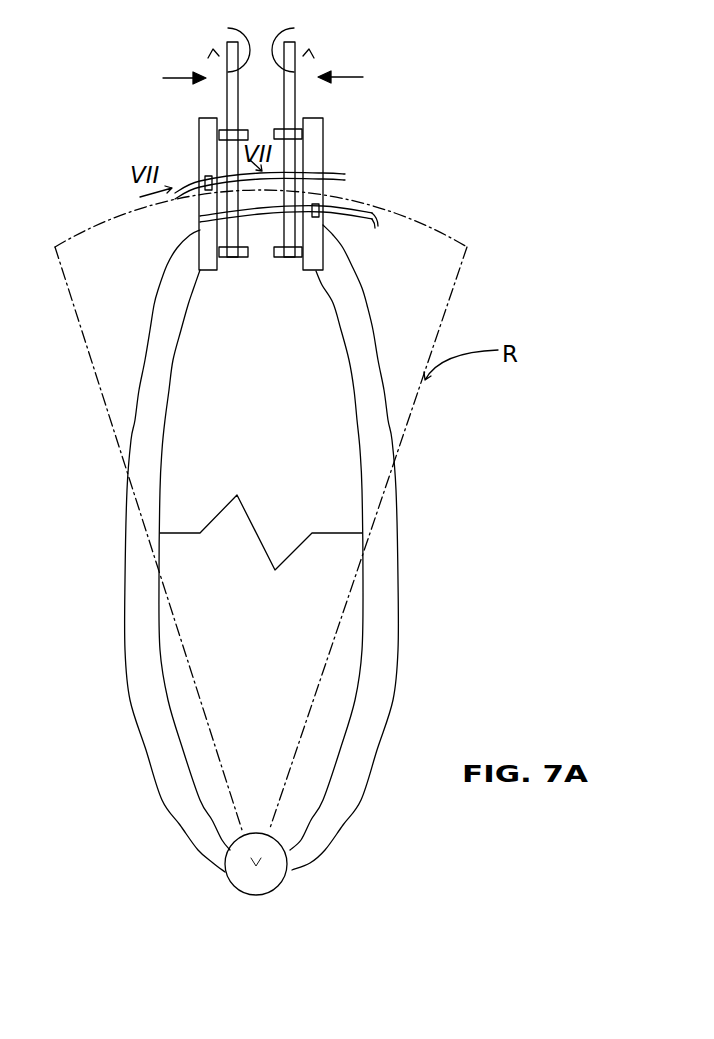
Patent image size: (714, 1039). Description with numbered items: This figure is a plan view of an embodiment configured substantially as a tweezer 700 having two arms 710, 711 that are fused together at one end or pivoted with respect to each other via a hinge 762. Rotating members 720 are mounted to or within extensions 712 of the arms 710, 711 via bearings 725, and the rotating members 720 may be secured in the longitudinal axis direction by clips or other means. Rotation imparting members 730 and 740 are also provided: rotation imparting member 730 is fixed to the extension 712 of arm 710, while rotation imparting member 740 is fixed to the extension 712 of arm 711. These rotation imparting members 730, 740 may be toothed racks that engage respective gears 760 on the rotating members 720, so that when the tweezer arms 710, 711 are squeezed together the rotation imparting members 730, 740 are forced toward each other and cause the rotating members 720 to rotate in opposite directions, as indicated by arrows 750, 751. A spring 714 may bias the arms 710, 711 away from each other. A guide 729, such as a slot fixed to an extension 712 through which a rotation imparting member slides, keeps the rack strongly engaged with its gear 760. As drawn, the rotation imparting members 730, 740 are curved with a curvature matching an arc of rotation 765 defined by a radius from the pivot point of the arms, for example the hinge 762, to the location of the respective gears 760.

The tweezer 700 is at (479, 513).
The arm 710 is at (398, 660).
The arm 711 is at (127, 662).
The extension 712 is at (323, 148).
The spring 714 is at (256, 532).
The rotating member 720 is at (297, 97).
The bearing 725 is at (255, 259).
The guide 729 is at (222, 128).
The rotation imparting member 730 is at (323, 183).
The rotation imparting member 740 is at (340, 216).
The arrow 750 is at (315, 53).
The arrow 751 is at (211, 58).
The gear 760 is at (206, 177).
The hinge 762 is at (278, 890).
The arc of rotation 765 is at (432, 218).